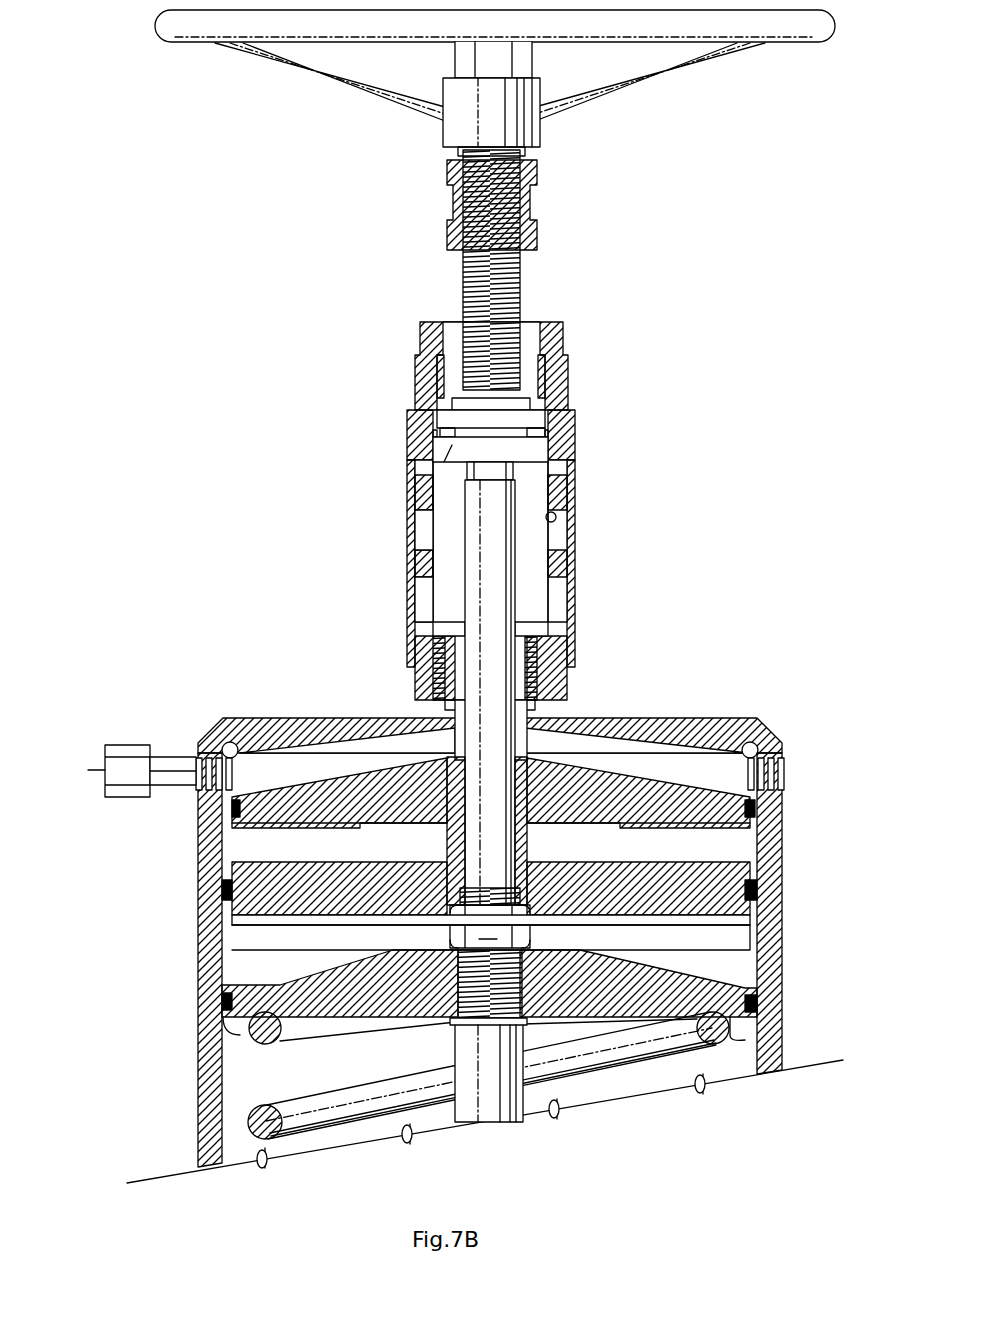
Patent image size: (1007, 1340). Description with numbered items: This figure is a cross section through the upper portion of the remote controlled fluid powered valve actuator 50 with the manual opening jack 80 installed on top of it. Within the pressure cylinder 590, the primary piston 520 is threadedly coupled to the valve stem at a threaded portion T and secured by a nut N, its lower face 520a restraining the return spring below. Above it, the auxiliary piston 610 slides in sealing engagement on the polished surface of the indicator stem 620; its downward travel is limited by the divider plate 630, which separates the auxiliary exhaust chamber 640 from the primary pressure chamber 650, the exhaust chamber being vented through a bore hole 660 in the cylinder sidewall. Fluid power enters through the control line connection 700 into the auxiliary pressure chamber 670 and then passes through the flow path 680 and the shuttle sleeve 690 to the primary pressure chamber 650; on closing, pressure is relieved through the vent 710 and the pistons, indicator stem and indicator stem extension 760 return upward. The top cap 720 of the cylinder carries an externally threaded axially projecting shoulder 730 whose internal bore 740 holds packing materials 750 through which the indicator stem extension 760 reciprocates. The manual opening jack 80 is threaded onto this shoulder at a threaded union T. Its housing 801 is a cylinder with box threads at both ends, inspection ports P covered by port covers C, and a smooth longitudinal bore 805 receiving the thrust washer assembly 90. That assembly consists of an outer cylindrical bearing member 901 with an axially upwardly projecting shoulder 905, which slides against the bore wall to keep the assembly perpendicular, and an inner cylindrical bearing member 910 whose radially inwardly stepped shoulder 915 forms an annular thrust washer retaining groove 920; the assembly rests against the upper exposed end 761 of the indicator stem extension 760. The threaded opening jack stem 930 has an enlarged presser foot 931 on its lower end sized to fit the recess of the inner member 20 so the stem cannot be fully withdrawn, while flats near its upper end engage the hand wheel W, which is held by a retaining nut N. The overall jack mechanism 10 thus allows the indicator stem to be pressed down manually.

The hand wheel W is at (835, 25).
The nut N is at (528, 62).
The inner member 20 is at (450, 180).
The threaded opening jack stem 930 is at (525, 290).
The drive assembly 10 is at (378, 318).
The thrust washer assembly 90 is at (398, 452).
The presser foot 931 is at (440, 388).
The axially upwardly projecting shoulder 905 is at (452, 404).
The annular thrust washer retaining groove 920 is at (435, 432).
The inner cylindrical bearing member 910 is at (528, 425).
The radially inwardly stepped shoulder 915 is at (530, 440).
The outer cylindrical bearing member 901 is at (442, 460).
The upper exposed end 761 is at (500, 468).
The inspection ports P is at (407, 493).
The port covers C is at (407, 524).
The smooth longitudinal bore 805 is at (556, 518).
The indicator stem extension 760 is at (510, 557).
The manual opening jack 80 is at (593, 558).
The manual opening jack housing 801 is at (422, 598).
The internal bore 740 is at (430, 655).
The packing materials 750 is at (445, 676).
The axially projecting shoulder 730 is at (570, 690).
The threaded portion T is at (548, 388).
The top cap 720 is at (290, 715).
The auxiliary pressure chamber 670 is at (720, 740).
The vent 710 is at (110, 765).
The control line connection 700 is at (790, 775).
The flow path 680 is at (550, 772).
The auxiliary exhaust chamber 640 is at (262, 845).
The shuttle sleeve 690 is at (442, 830).
The auxiliary piston 610 is at (760, 835).
The bore hole 660 is at (215, 880).
The divider plate 630 is at (260, 942).
The primary pressure chamber 650 is at (258, 952).
The indicator stem 620 is at (500, 856).
The pressure cylinder 590 is at (775, 972).
The remote controlled fluid powered valve actuator 50 is at (800, 993).
The primary piston 520 is at (215, 1045).
The lower face of primary piston 520a is at (765, 1038).